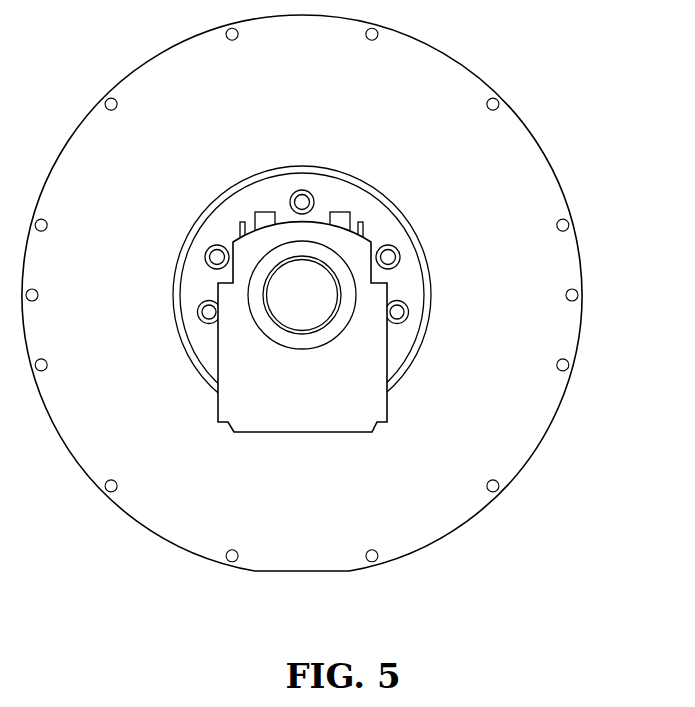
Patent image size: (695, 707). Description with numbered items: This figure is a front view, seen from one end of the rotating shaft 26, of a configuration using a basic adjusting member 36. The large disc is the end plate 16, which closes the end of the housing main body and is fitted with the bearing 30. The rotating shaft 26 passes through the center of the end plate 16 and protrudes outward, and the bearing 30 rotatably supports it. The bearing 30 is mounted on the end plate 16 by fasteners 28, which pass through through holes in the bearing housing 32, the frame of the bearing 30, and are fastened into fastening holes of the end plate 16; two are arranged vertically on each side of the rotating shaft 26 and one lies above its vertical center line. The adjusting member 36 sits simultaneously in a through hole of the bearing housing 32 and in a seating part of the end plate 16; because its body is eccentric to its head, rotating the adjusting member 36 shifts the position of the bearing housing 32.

The end plate 16 is at (410, 497).
The rotating shaft 26 is at (310, 307).
The fastener 28 is at (398, 248).
The bearing 30 is at (297, 407).
The bearing housing 32 is at (343, 200).
The adjusting member 36 is at (400, 258).